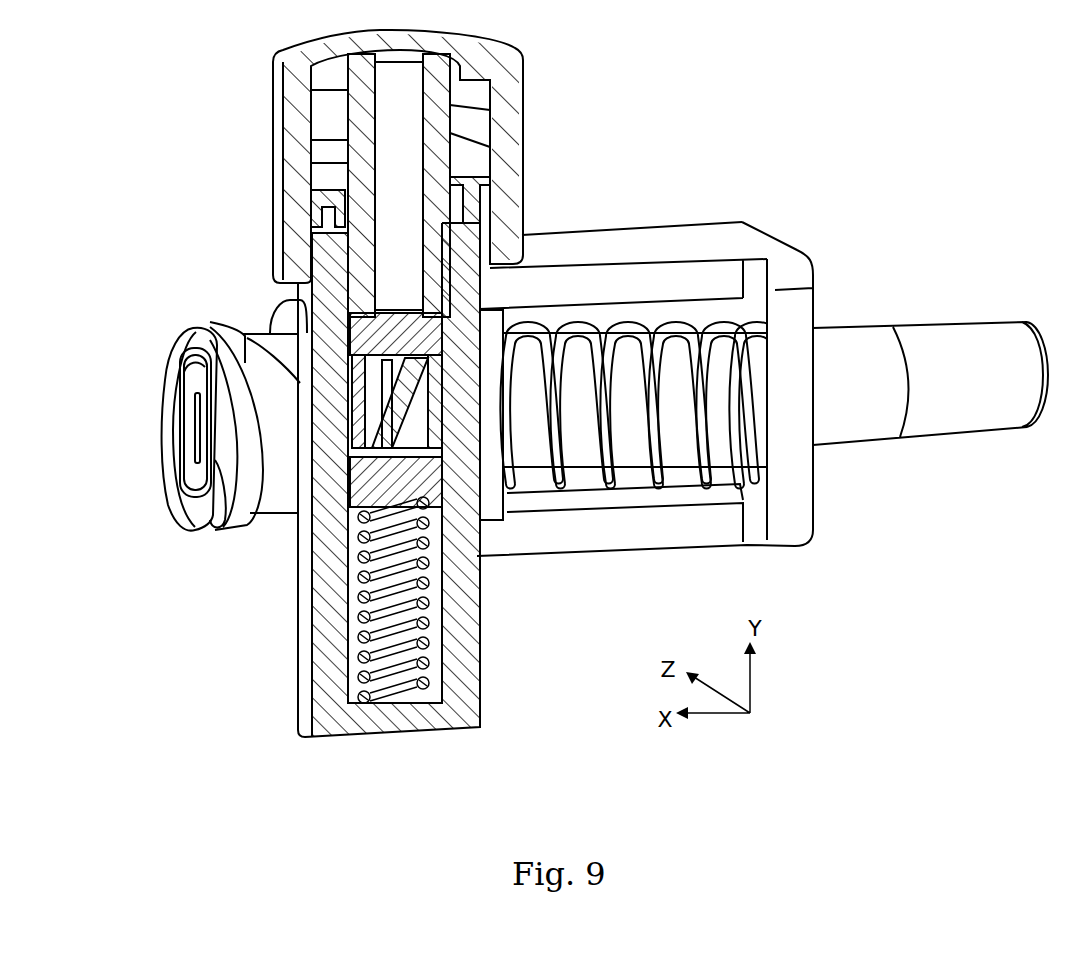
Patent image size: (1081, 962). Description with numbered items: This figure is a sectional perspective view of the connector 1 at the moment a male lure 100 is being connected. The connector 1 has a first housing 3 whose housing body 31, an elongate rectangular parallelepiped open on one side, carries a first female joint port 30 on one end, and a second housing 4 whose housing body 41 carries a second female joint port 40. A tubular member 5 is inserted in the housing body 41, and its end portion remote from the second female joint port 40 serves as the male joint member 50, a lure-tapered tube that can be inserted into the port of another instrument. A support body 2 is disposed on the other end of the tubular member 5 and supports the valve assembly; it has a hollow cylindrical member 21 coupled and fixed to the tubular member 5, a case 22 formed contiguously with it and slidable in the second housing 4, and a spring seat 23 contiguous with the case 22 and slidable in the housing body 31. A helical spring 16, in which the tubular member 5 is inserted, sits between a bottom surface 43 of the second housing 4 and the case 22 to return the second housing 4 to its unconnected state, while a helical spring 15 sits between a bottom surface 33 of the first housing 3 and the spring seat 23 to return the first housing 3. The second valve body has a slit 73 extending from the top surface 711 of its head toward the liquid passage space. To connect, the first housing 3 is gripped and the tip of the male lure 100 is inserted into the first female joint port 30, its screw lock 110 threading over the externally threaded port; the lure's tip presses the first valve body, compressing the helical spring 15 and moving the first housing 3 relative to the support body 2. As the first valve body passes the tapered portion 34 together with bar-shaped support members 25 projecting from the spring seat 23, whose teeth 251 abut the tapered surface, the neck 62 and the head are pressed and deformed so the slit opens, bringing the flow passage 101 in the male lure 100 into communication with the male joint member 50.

The connector 1 is at (796, 120).
The screw lock 110 is at (505, 93).
The male lure 100 is at (320, 185).
The flow passage 101 is at (395, 122).
The first female joint port 30 is at (340, 185).
The tapered portion 34 is at (325, 232).
The first housing 3 is at (377, 486).
The housing body 31 is at (323, 670).
The bottom surface 33 is at (405, 718).
The teeth 251 is at (303, 317).
The neck 62 is at (378, 468).
The spring seat 23 is at (372, 490).
The support members 25 is at (207, 327).
The helical spring 15 is at (362, 627).
The second female joint port 40 is at (135, 425).
The top surface 711 is at (190, 467).
The slit 73 is at (193, 438).
The second housing 4 is at (687, 372).
The housing body 41 is at (657, 250).
The bottom surface 43 is at (780, 478).
The support body 2 is at (547, 513).
The case 22 is at (516, 510).
The helical spring 16 is at (660, 463).
The hollow cylindrical member 21 is at (594, 430).
The tubular member 5 is at (930, 333).
The male joint member 50 is at (970, 335).